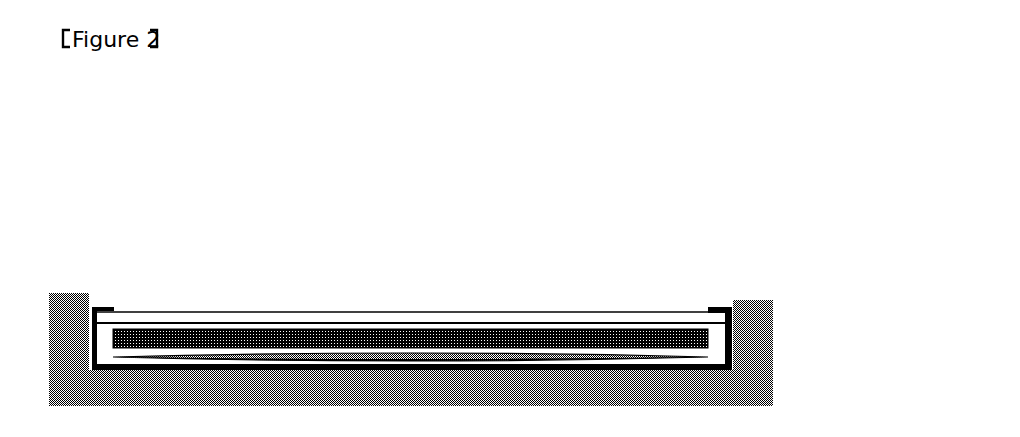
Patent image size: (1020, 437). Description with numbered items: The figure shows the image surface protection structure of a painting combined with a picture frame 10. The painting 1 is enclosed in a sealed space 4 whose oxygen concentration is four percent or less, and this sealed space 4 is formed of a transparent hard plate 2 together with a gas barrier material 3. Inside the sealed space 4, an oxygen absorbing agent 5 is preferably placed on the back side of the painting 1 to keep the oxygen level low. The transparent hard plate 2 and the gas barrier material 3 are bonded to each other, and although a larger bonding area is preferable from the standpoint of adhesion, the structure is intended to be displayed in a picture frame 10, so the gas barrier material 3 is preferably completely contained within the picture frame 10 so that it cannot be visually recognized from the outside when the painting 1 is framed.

The painting 1 is at (265, 320).
The transparent hard plate 2 is at (352, 311).
The gas barrier material 3 is at (103, 306).
The sealed space 4 is at (715, 333).
The oxygen absorbing agent 5 is at (575, 355).
The picture frame 10 is at (773, 340).